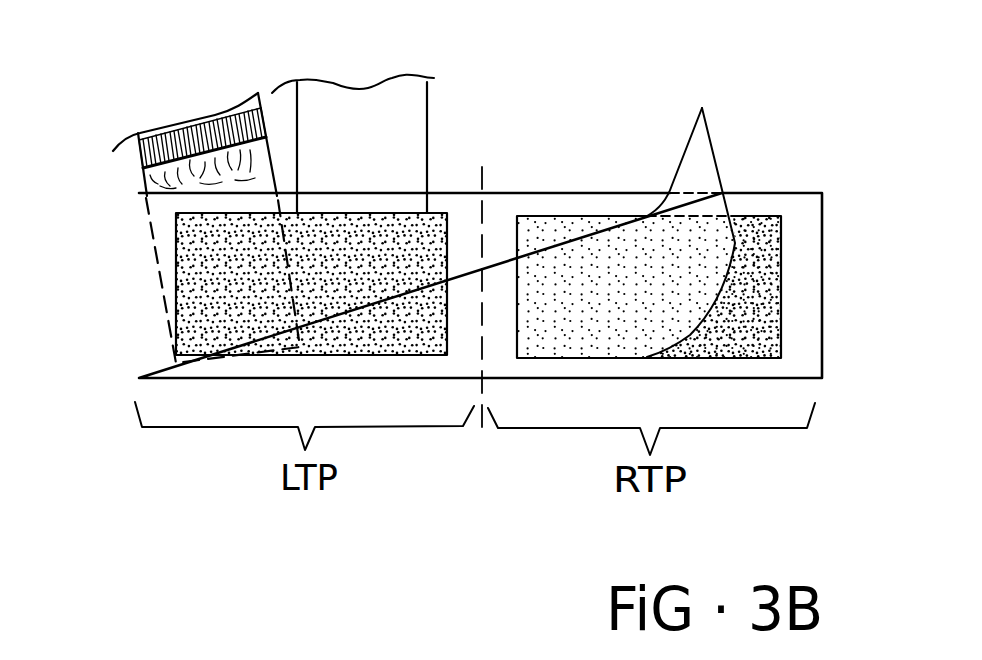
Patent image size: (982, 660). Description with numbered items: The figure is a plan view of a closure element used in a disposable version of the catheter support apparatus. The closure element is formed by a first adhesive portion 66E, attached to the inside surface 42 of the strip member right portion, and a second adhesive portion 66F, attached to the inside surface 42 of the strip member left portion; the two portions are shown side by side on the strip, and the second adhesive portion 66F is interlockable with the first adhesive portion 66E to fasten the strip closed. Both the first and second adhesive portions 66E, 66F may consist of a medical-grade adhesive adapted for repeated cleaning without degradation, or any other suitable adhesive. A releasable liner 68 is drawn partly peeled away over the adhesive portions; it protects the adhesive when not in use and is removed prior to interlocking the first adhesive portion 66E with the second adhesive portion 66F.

The inside surface 42 is at (157, 300).
The first adhesive portion 66E is at (747, 273).
The second adhesive portion 66F is at (397, 277).
The releasable liner 68 is at (702, 167).